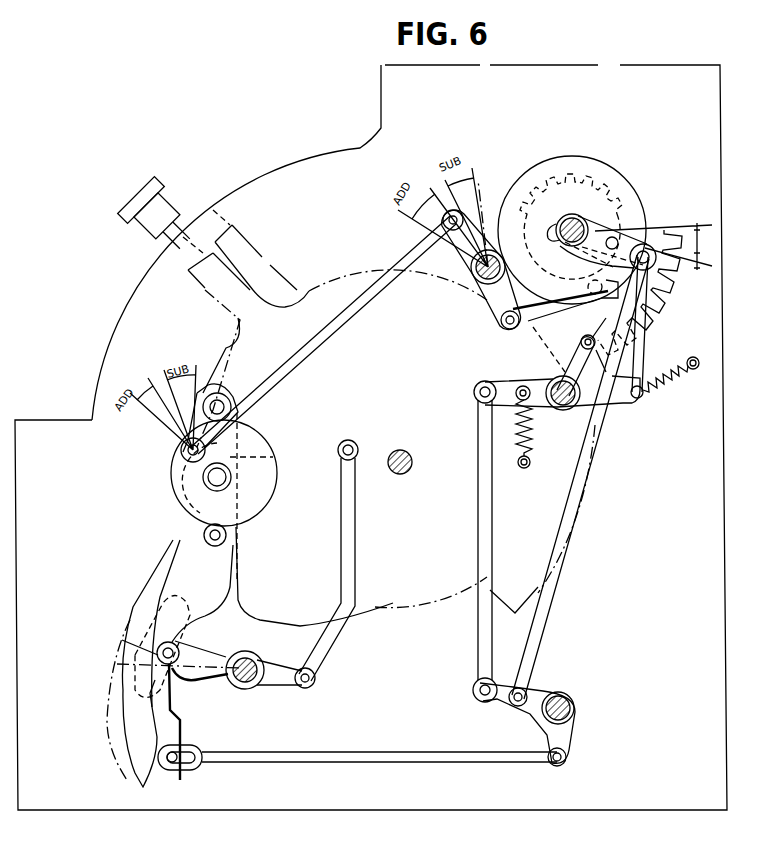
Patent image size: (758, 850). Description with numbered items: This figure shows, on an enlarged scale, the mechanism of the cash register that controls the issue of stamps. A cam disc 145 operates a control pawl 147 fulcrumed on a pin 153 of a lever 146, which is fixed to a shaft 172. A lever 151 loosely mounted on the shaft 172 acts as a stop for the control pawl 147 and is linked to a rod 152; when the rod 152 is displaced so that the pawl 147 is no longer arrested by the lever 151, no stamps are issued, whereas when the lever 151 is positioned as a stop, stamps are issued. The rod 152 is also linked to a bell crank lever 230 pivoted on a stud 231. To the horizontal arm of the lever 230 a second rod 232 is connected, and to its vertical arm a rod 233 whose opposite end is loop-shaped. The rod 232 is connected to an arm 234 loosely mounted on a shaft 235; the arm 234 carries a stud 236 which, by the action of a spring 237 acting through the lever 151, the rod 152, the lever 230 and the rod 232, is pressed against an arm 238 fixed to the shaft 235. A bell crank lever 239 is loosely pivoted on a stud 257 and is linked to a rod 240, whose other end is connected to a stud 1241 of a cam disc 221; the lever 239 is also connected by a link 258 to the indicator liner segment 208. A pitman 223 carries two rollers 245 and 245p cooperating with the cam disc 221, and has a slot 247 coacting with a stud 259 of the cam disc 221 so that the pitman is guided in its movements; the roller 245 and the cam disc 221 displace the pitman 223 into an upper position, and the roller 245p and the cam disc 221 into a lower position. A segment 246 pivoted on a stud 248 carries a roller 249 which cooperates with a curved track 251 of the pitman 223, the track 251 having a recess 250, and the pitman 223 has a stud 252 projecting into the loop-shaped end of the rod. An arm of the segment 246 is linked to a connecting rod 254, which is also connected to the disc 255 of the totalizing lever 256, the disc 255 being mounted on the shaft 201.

The totalizing lever 256 is at (126, 198).
The disc 255 is at (225, 347).
The roller 245 is at (222, 395).
The stud 1241 is at (188, 455).
The rod 240 is at (332, 333).
The cam disc 221 is at (258, 438).
The slot 247 is at (273, 457).
The stud 259 is at (212, 480).
The roller 245p is at (204, 532).
The pitman 223 is at (170, 566).
The curved track 251 is at (210, 606).
The recess 250 is at (158, 648).
The segment 246 is at (202, 655).
The roller 249 is at (176, 678).
The stud 248 is at (232, 690).
The connecting rod 254 is at (332, 645).
The stud 252 is at (168, 771).
The rod 233 is at (383, 756).
The bell crank lever 230 is at (536, 694).
The stud 231 is at (574, 706).
The rod 232 is at (546, 624).
The rod 152 is at (482, 500).
The lever 151 is at (613, 403).
The shaft 172 is at (562, 411).
The spring 237 is at (520, 458).
The shaft 201 is at (422, 445).
The stud 257 is at (476, 280).
The bell crank lever 239 is at (498, 300).
The link 258 is at (512, 331).
The lever 146 is at (578, 360).
The pin 153 is at (583, 344).
The control pawl 147 is at (635, 340).
The cam disc 145 is at (640, 200).
The indicator liner segment 208 is at (659, 292).
The arm 234 is at (628, 247).
The stud 236 is at (592, 218).
The shaft 235 is at (545, 224).
The arm 238 is at (593, 260).